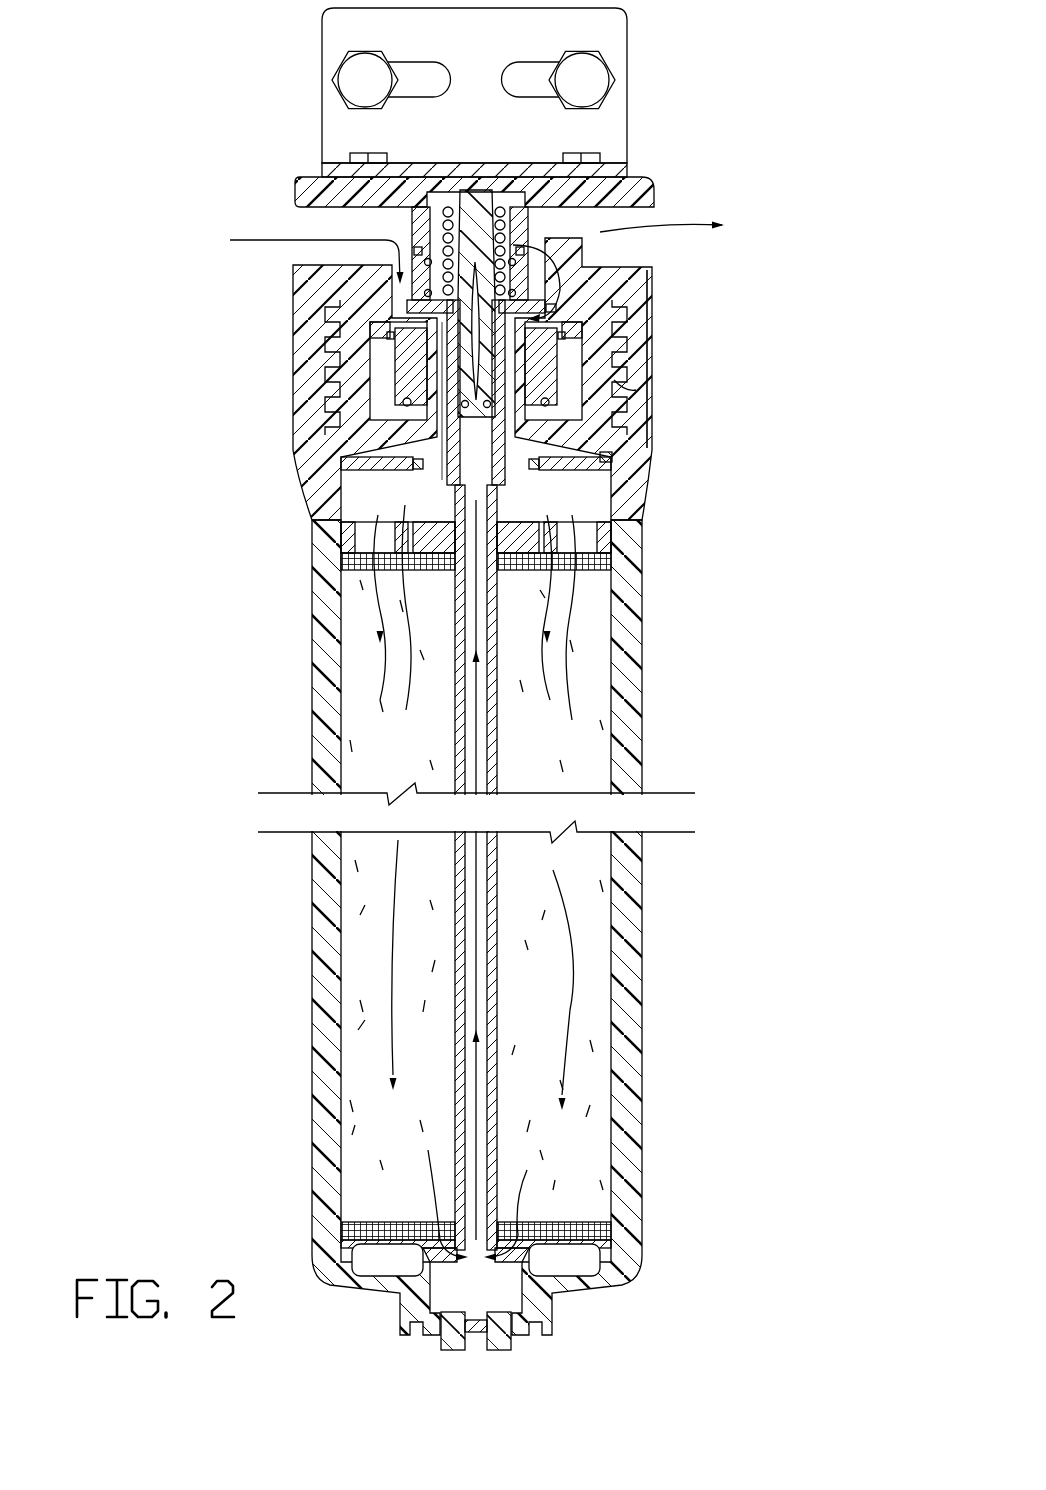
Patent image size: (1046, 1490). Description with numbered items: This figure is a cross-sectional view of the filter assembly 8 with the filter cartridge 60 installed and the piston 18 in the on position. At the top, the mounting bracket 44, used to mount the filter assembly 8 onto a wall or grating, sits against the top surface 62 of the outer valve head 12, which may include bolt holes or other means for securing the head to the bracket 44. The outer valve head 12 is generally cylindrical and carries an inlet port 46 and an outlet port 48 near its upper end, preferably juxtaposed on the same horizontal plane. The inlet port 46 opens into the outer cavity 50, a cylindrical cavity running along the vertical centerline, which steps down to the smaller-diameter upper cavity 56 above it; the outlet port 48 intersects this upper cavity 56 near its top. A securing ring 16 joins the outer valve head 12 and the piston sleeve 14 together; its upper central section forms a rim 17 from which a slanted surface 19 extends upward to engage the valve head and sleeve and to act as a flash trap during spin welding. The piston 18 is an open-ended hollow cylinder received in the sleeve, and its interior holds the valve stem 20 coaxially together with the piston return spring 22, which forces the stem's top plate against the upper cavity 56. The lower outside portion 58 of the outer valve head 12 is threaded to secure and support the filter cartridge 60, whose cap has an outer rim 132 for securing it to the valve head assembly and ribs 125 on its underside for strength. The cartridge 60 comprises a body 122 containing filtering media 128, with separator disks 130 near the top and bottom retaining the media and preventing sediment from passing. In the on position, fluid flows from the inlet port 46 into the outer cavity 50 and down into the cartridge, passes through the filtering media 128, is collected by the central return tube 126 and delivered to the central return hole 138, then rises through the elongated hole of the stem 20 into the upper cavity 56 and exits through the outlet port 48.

The fuel filter assembly 8 is at (160, 328).
The outer valve head 12 is at (725, 323).
The piston sleeve 14 is at (375, 405).
The securing ring 16 is at (370, 375).
The rim 17 is at (582, 362).
The piston 18 is at (412, 312).
The slanted surface 19 is at (555, 325).
The valve stem 20 is at (473, 193).
The piston return spring 22 is at (520, 207).
The mounting bracket 44 is at (675, 76).
The inlet port 46 is at (300, 262).
The outlet port 48 is at (638, 248).
The outer cavity 50 is at (430, 292).
The upper cavity 56 is at (430, 236).
The lower outside portion 58 is at (652, 365).
The filter cartridge 60 is at (745, 884).
The top surface 62 is at (640, 177).
The body 122 is at (312, 940).
The ribs 125 is at (405, 466).
The central return tube 126 is at (472, 600).
The filtering media 128 is at (585, 985).
The separator disks 130 is at (340, 563).
The outer rim 132 is at (637, 390).
The central return hole 138 is at (612, 456).